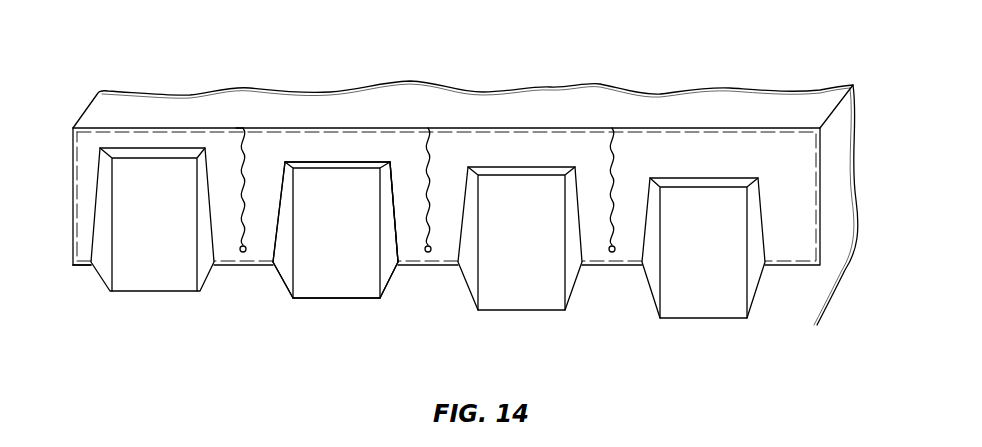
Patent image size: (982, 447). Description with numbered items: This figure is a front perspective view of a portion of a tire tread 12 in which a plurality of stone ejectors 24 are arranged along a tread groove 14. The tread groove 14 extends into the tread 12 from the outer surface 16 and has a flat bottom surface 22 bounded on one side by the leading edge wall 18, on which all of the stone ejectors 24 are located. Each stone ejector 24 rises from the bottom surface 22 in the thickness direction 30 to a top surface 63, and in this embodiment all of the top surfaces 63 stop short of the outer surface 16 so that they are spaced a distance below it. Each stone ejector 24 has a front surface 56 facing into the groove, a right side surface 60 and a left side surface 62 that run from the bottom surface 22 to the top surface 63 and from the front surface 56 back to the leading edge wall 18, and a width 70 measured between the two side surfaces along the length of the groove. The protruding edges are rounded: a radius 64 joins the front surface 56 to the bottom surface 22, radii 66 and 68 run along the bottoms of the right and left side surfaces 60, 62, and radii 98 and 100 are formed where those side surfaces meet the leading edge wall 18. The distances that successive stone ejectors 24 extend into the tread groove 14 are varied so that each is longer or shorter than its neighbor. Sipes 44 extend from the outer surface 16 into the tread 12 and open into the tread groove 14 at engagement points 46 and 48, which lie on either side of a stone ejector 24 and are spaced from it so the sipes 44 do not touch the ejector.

The tread 12 is at (793, 98).
The tread groove 14 is at (805, 158).
The outer surface 16 is at (165, 100).
The leading edge wall 18 is at (80, 167).
The bottom surface 22 is at (800, 291).
The stone ejector 24 is at (349, 263).
The thickness direction 30 is at (752, 81).
The sipe 44 is at (242, 172).
The engagement point 46 is at (244, 138).
The engagement point 48 is at (430, 148).
The front surface 56 is at (528, 286).
The right side surface 60 is at (278, 258).
The left side surface 62 is at (394, 258).
The top surface 63 is at (342, 158).
The radius 64 is at (341, 300).
The radius 66 is at (282, 278).
The radius 68 is at (389, 278).
The width 70 is at (651, 277).
The radius 98 is at (283, 194).
The radius 100 is at (388, 186).